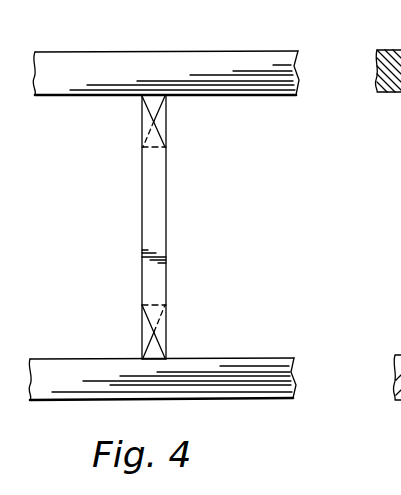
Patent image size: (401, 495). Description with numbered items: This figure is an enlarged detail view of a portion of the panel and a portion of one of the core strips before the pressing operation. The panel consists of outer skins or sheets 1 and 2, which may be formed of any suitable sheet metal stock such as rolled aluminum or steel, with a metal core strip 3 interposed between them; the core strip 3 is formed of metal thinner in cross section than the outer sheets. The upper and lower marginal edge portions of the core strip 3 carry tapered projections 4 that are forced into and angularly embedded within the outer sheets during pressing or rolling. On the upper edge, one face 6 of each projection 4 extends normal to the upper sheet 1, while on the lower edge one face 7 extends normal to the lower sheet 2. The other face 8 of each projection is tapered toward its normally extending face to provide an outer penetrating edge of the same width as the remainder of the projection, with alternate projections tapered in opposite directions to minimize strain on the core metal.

The outer skin or sheet 1 is at (240, 51).
The outer skin or sheet 2 is at (231, 400).
The metal core strip 3 is at (167, 233).
The tapered projection 4 is at (167, 118).
The face of projection 6 is at (142, 118).
The face of projection 7 is at (167, 331).
The tapered face 8 is at (142, 110).